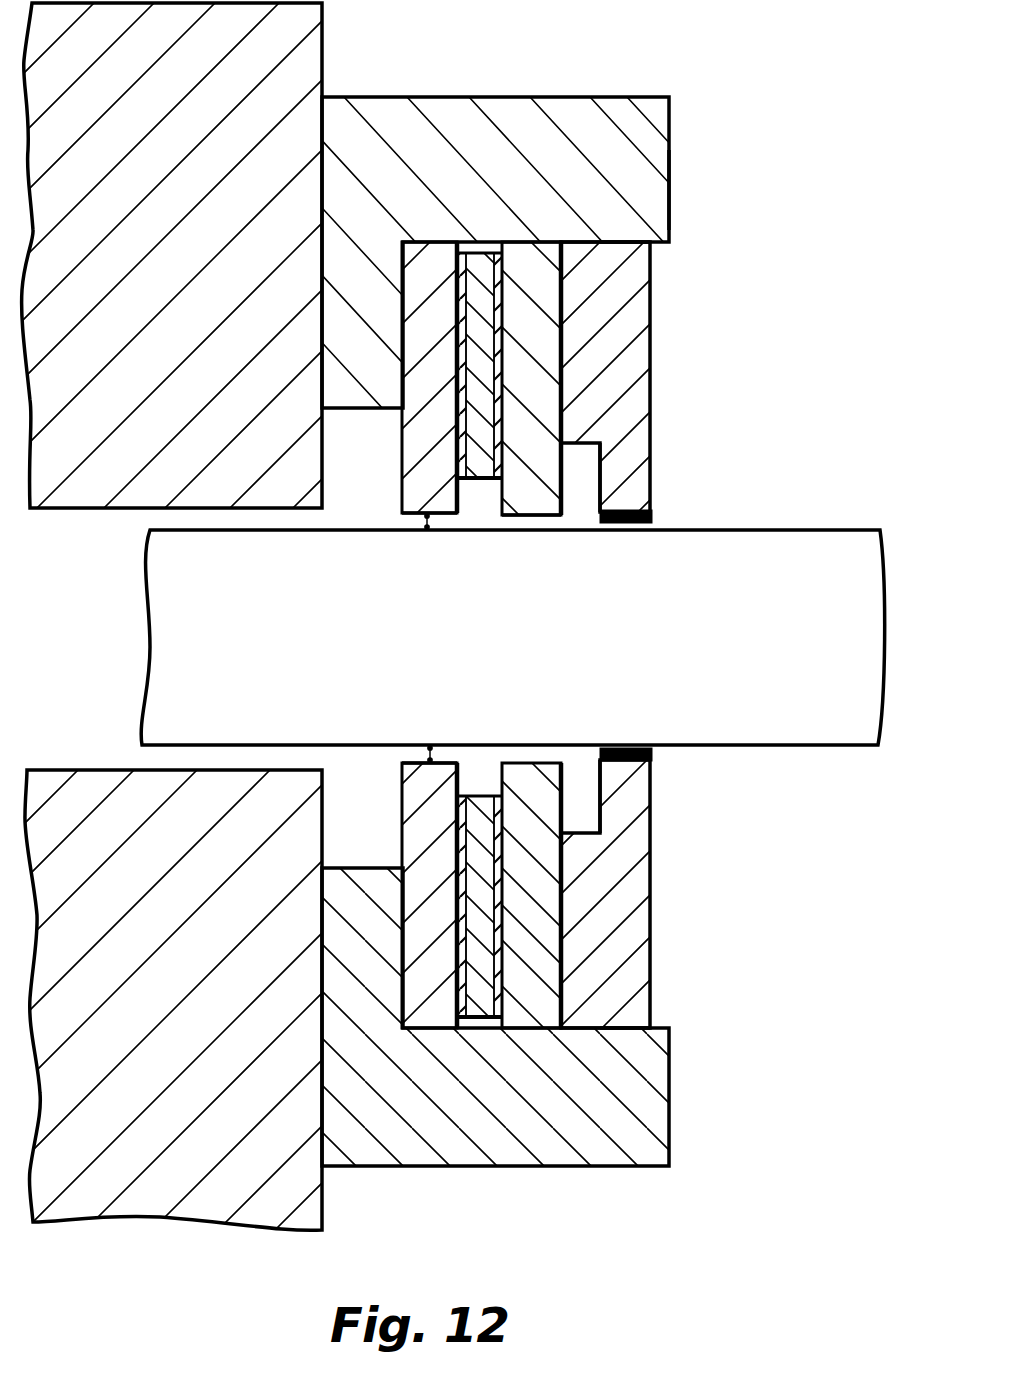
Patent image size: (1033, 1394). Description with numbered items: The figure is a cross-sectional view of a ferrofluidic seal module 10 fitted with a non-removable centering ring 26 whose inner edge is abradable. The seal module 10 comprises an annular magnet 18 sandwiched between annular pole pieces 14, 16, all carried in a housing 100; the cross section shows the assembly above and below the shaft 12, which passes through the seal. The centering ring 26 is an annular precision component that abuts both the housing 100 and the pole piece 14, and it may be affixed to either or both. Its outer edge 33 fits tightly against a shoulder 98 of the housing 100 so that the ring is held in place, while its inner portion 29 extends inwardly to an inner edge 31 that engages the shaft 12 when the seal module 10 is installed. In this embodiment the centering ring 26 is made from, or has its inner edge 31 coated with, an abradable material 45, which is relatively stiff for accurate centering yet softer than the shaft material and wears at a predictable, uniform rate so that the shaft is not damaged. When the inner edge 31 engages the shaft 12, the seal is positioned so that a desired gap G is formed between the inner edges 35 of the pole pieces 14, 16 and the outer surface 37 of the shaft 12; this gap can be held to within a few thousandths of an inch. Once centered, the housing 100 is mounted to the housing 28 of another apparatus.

The ferrofluidic seal module 10 is at (520, 64).
The shaft 12 is at (780, 528).
The annular pole piece 14 is at (549, 405).
The annular pole piece 16 is at (447, 402).
The annular magnet 18 is at (496, 442).
The centering ring 26 is at (653, 357).
The housing of another apparatus 28 is at (185, 258).
The inner portion 29 is at (640, 503).
The inner edge 31 is at (630, 528).
The outer edge 33 is at (612, 245).
The inner edges of pole pieces 35 is at (447, 530).
The outer surface of the shaft 37 is at (553, 528).
The abradable material 45 is at (600, 525).
The shoulder 98 is at (657, 213).
The housing 100 is at (655, 152).
The gap G is at (418, 521).